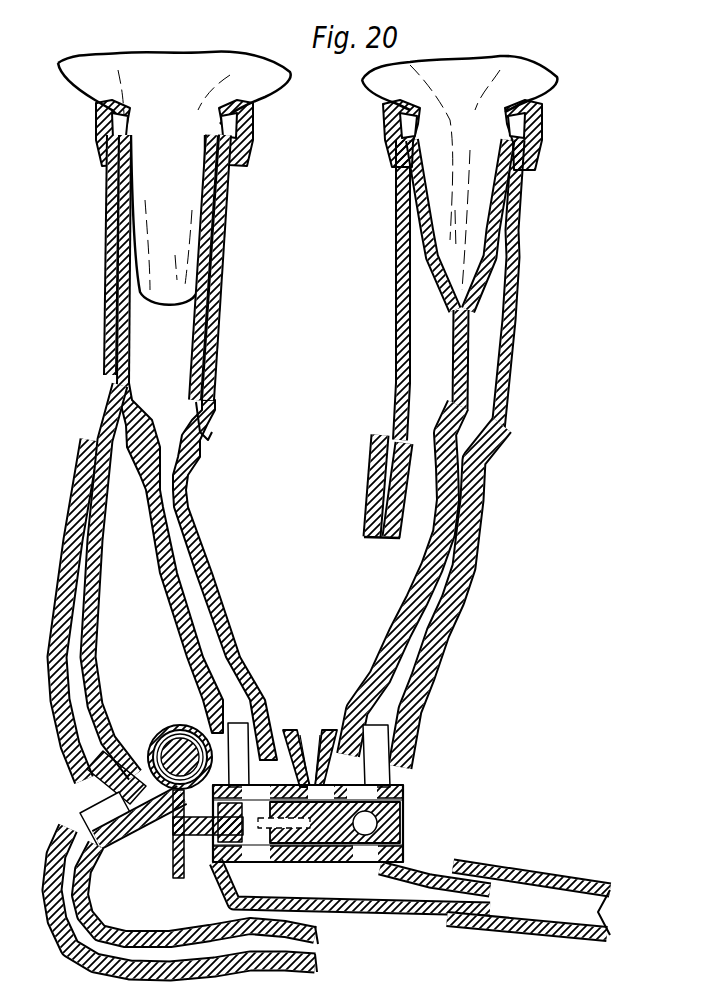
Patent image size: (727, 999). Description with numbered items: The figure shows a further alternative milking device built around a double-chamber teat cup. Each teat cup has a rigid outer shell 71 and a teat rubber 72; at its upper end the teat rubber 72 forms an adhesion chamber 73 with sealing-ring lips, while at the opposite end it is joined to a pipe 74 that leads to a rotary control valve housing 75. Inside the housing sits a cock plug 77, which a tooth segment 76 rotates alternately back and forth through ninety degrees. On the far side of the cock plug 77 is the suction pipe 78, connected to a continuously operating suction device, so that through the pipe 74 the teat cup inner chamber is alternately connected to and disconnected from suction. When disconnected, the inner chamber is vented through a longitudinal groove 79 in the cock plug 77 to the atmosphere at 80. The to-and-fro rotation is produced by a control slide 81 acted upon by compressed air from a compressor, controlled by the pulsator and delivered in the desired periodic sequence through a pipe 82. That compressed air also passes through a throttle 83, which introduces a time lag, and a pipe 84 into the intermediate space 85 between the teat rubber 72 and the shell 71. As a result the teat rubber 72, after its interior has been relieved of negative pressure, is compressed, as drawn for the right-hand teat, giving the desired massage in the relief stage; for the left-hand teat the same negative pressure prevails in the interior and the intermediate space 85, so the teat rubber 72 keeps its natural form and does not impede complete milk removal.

The rigid outer shell 71 is at (230, 240).
The teat rubber 72 is at (465, 347).
The adhesion chamber 73 is at (515, 126).
The pipe 74 is at (457, 597).
The rotary control valve housing 75 is at (400, 795).
The tooth segment 76 is at (173, 860).
The cock plug 77 is at (392, 823).
The suction pipe 78 is at (522, 893).
The longitudinal groove 79 is at (330, 784).
The atmosphere opening 80 is at (310, 784).
The control slide 81 is at (180, 757).
The pipe 82 is at (322, 948).
The throttle 83 is at (125, 747).
The pipe 84 is at (86, 634).
The intermediate space 85 is at (207, 343).